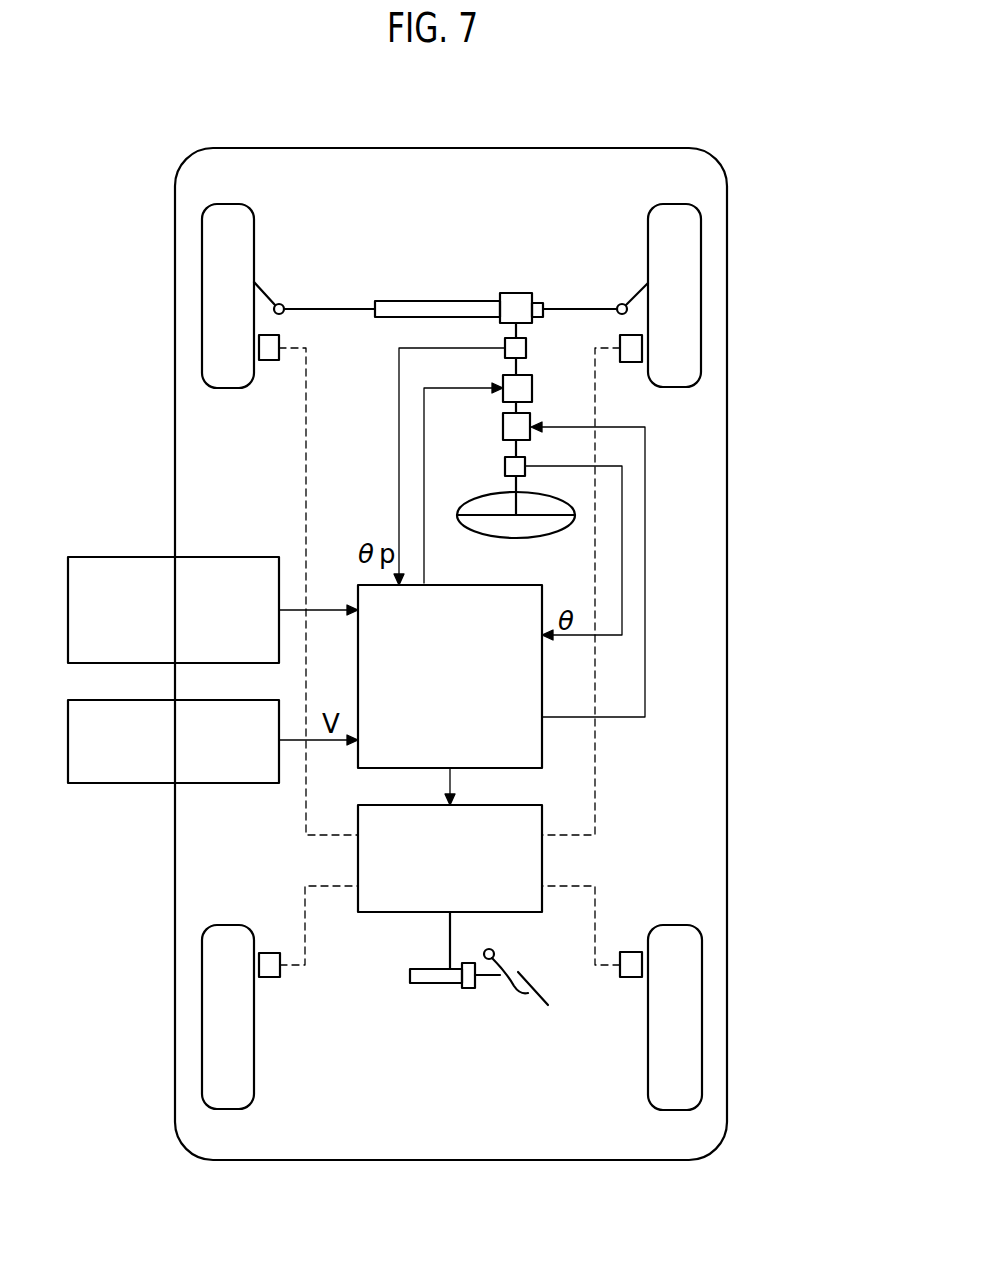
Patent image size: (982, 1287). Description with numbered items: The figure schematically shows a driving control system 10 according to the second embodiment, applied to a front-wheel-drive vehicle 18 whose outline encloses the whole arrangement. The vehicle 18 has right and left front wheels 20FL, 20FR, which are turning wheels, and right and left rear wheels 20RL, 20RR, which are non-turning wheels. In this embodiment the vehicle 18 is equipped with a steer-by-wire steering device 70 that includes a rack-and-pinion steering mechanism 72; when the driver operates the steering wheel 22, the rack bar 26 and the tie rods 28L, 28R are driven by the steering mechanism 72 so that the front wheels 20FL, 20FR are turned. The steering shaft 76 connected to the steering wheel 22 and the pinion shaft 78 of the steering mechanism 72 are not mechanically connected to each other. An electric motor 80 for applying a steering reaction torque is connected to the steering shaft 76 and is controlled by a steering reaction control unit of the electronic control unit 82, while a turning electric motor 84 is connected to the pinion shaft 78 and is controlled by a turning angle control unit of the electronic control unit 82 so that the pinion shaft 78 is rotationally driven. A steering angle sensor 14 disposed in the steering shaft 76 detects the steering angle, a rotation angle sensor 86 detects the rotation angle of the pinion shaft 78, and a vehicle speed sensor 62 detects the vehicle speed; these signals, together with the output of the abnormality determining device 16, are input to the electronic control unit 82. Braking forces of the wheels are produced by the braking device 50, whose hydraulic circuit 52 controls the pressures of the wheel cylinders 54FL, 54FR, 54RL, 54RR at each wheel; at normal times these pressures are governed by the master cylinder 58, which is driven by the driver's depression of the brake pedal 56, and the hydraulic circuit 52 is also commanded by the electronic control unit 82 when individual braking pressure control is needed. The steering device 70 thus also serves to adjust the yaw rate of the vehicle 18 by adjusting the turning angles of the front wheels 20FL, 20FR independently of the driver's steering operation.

The driving control system 10 is at (484, 255).
The steering angle sensor 14 is at (505, 466).
The abnormality determining device 16 is at (118, 557).
The vehicle 18 is at (727, 552).
The left front wheel 20FL is at (202, 309).
The right front wheel 20FR is at (701, 309).
The left rear wheel 20RL is at (202, 1022).
The right rear wheel 20RR is at (702, 1028).
The steering wheel 22 is at (483, 535).
The rack bar 26 is at (343, 301).
The left tie rod 28L is at (267, 293).
The right tie rod 28R is at (637, 292).
The braking device 50 is at (481, 979).
The hydraulic circuit 52 is at (465, 899).
The left front wheel cylinder 54FL is at (268, 361).
The right front wheel cylinder 54FR is at (633, 362).
The left rear wheel cylinder 54RL is at (268, 953).
The right rear wheel cylinder 54RR is at (630, 952).
The brake pedal 56 is at (527, 978).
The master cylinder 58 is at (432, 969).
The vehicle speed sensor 62 is at (123, 783).
The steer-by-wire steering device 70 is at (434, 455).
The rack-and-pinion steering mechanism 72 is at (427, 300).
The steering shaft 76 is at (520, 450).
The pinion shaft 78 is at (503, 363).
The electric motor 80 is at (503, 427).
The electronic control unit 82 is at (465, 731).
The turning electric motor 84 is at (532, 389).
The rotation angle sensor 86 is at (527, 348).